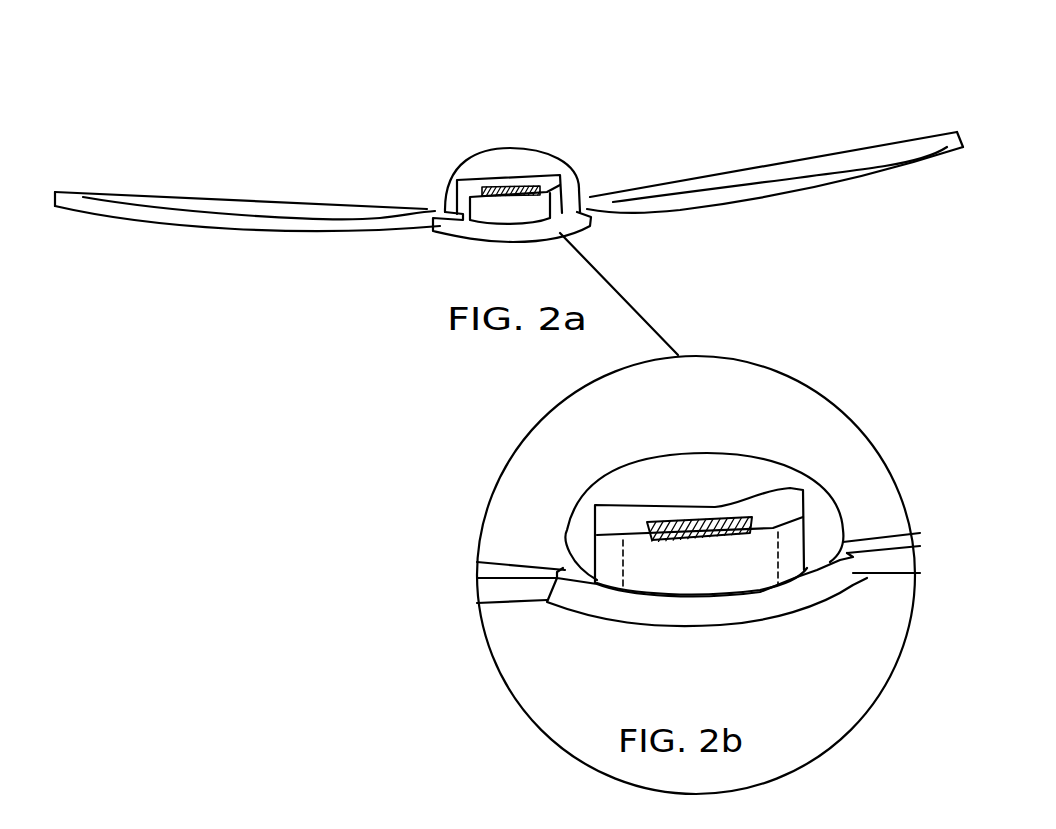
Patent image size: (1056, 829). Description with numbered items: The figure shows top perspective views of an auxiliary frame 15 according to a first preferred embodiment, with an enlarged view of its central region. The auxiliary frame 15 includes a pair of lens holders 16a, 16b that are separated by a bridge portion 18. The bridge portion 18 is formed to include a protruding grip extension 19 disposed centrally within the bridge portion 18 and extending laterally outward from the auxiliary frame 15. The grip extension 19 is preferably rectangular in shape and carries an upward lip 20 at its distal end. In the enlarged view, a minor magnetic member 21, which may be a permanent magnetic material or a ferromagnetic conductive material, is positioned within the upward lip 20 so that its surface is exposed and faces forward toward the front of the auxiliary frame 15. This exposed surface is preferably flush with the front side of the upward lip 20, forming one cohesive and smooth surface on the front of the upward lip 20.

In FIG. 2A, the auxiliary frame 15 is at (750, 118).
In FIG. 2A, the lens holder 16a is at (193, 220).
In FIG. 2A, the lens holder 16b is at (797, 183).
In FIG. 2A, the bridge portion 18 is at (477, 230).
In FIG. 2B, the bridge portion 18 is at (618, 607).
In FIG. 2A, the grip extension 19 is at (491, 160).
In FIG. 2B, the grip extension 19 is at (592, 488).
In FIG. 2A, the upward lip 20 is at (547, 183).
In FIG. 2B, the upward lip 20 is at (780, 507).
In FIG. 2B, the minor magnetic member 21 is at (715, 535).